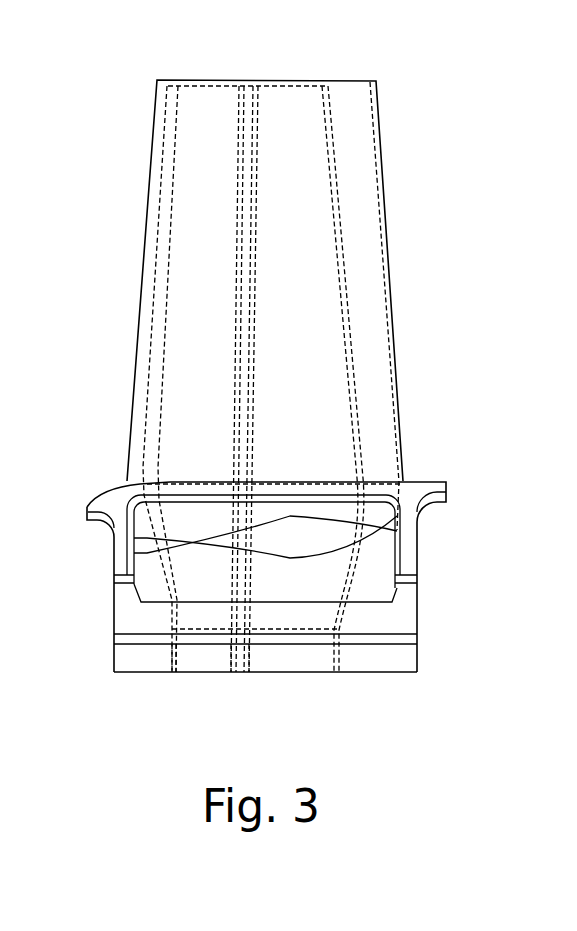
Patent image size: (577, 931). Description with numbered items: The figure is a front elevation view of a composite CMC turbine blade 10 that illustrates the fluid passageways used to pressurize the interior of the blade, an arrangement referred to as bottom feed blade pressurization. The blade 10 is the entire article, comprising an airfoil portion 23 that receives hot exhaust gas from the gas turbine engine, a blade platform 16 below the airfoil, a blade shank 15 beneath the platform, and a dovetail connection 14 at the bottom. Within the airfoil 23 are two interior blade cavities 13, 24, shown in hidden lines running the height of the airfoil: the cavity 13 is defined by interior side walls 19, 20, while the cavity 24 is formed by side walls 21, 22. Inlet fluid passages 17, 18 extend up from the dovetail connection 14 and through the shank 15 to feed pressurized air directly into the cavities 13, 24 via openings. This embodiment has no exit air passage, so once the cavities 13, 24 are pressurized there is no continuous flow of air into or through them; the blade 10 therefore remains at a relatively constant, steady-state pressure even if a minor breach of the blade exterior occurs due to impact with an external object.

The turbine blade 10 is at (410, 108).
The interior blade cavity 13 is at (313, 285).
The dovetail connection 14 is at (400, 659).
The blade shank 15 is at (363, 577).
The blade platform 16 is at (413, 500).
The inlet fluid passage 17 is at (200, 653).
The inlet fluid passage 18 is at (283, 657).
The interior side wall 19 is at (353, 382).
The interior side wall 20 is at (255, 360).
The side wall 21 is at (168, 213).
The side wall 22 is at (238, 373).
The airfoil portion 23 is at (357, 207).
The interior blade cavity 24 is at (193, 275).